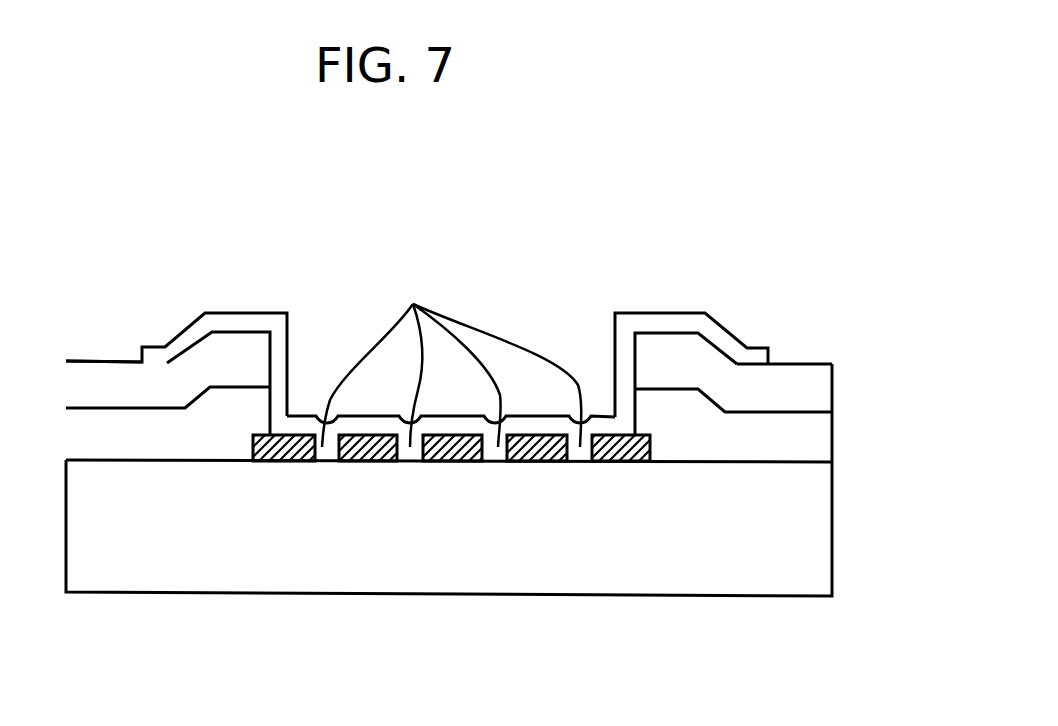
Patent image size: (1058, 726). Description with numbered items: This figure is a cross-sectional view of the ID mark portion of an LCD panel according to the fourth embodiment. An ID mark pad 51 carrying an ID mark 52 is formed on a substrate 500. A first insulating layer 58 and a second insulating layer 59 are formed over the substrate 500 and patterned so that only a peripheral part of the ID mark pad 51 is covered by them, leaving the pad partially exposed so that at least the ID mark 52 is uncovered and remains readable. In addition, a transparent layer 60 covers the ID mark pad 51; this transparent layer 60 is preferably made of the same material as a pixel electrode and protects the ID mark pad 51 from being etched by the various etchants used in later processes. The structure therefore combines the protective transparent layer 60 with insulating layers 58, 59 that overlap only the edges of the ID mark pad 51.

The substrate 500 is at (810, 527).
The first insulating layer 58 is at (813, 439).
The second insulating layer 59 is at (827, 396).
The transparent layer 60 is at (755, 353).
The ID mark pad 51 is at (255, 468).
The ID mark 52 is at (451, 355).